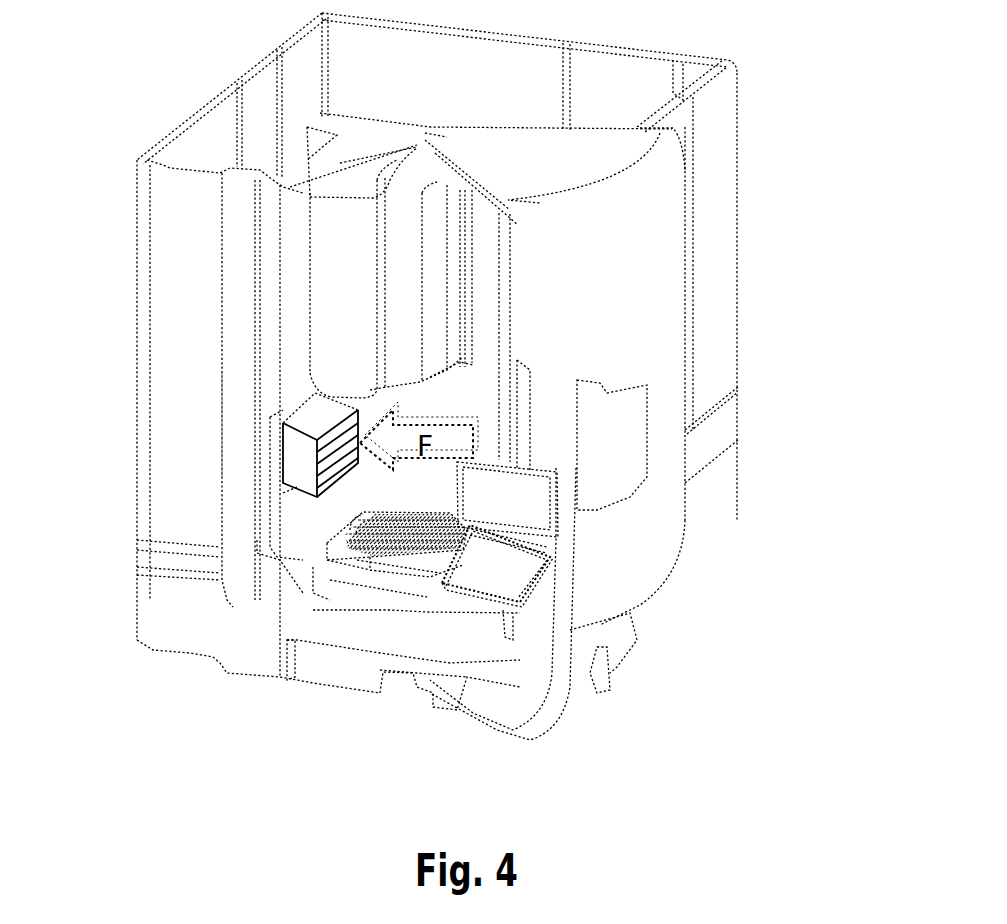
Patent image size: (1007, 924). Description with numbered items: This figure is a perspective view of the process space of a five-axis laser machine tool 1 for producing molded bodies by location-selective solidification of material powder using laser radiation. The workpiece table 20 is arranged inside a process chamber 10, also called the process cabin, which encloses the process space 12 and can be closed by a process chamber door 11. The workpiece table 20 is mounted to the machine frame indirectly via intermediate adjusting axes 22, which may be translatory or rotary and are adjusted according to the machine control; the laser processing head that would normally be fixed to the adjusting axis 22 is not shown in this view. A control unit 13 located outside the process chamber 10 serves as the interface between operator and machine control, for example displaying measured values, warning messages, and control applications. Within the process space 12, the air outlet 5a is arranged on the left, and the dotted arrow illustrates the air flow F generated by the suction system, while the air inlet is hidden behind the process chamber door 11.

The machine 1 is at (172, 91).
The process chamber 10 is at (340, 150).
The adjusting axes 22 is at (322, 320).
The process space 12 is at (470, 397).
The process chamber door 11 is at (660, 520).
The air outlet 5a is at (297, 460).
The workpiece table 20 is at (400, 560).
The control unit 13 is at (520, 503).